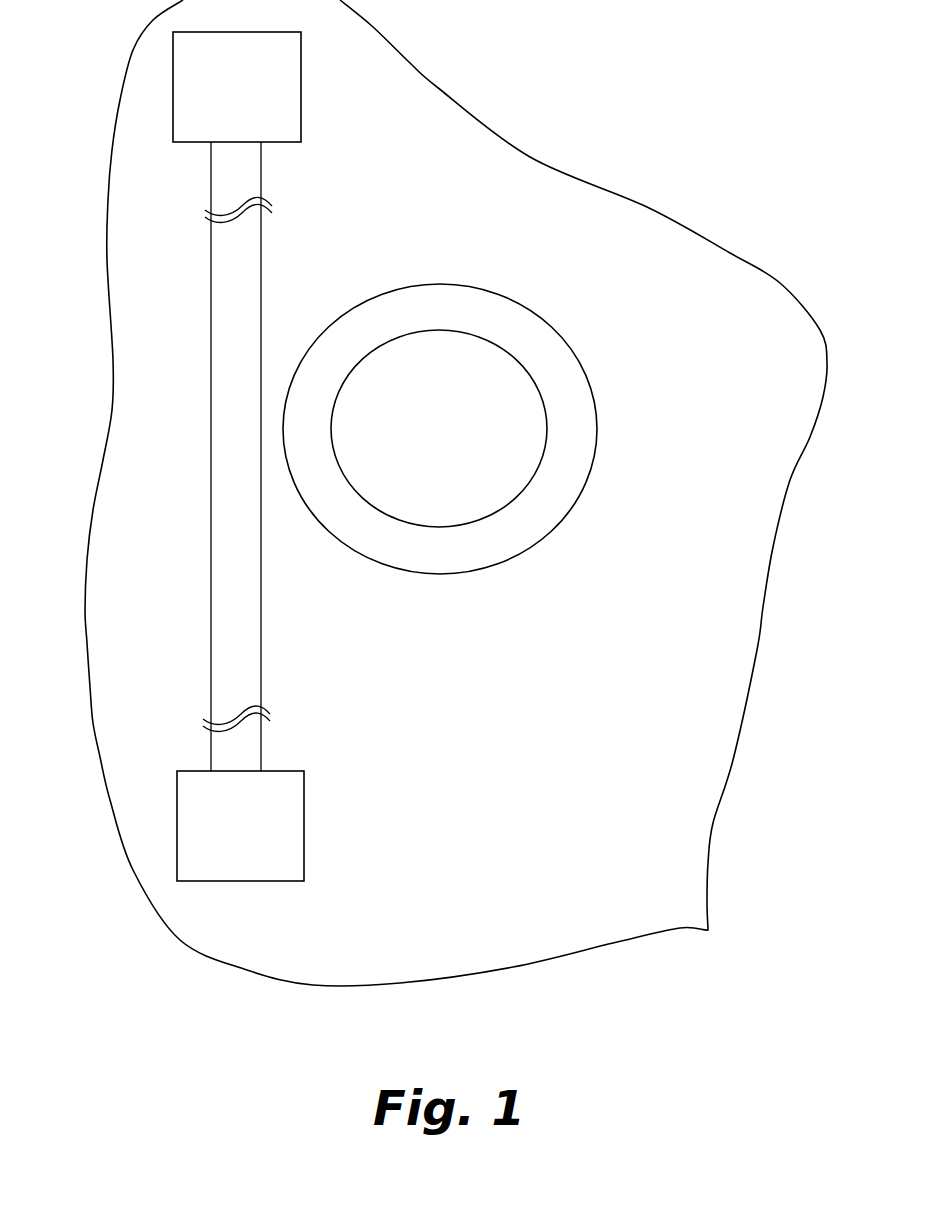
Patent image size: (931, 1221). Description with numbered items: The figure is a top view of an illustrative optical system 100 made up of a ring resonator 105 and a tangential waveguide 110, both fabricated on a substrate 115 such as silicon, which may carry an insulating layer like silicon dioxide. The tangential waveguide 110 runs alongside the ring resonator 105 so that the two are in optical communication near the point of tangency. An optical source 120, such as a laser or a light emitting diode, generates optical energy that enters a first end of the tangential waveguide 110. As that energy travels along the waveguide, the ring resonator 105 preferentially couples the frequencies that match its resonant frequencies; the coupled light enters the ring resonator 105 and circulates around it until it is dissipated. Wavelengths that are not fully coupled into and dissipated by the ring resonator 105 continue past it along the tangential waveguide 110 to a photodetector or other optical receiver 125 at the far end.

The optical system 100 is at (730, 150).
The ring resonator 105 is at (565, 366).
The tangential waveguide 110 is at (232, 242).
The substrate 115 is at (433, 134).
The optical source 120 is at (222, 873).
The optical receiver 125 is at (222, 134).